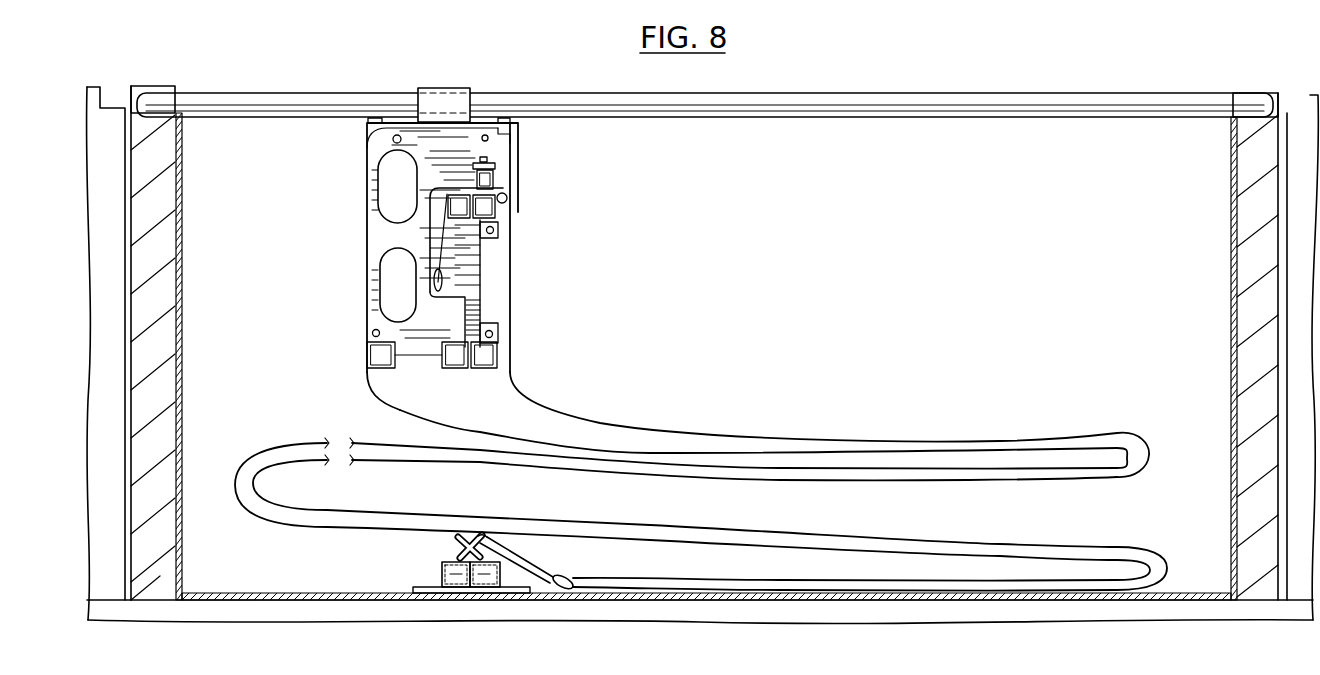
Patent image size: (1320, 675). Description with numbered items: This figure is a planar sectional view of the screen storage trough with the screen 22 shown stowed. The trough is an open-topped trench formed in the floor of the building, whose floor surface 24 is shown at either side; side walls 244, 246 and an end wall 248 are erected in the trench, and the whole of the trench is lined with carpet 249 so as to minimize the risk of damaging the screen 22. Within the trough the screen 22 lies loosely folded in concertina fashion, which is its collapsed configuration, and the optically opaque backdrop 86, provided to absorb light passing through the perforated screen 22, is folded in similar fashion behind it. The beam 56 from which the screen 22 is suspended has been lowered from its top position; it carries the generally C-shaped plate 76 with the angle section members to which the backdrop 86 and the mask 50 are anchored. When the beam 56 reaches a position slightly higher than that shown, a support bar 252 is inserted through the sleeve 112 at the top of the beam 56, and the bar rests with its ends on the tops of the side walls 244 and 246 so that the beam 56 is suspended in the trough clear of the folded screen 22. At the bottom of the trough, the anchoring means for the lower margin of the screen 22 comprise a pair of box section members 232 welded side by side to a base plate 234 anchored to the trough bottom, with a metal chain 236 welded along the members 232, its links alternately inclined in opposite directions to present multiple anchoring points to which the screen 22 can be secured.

The floor surface 24 is at (98, 84).
The metal chain 236 is at (135, 167).
The side wall 244 is at (158, 283).
The side wall 246 is at (1252, 220).
The carpet 249 is at (1178, 596).
The support bar 252 is at (851, 104).
The sleeve 112 is at (458, 98).
The end wall 248 is at (881, 236).
The beam 56 is at (362, 205).
The plate 76 is at (413, 146).
The mask 50 is at (518, 168).
The backdrop 86 is at (366, 398).
The screen 22 is at (600, 420).
The box section member 232 is at (442, 578).
The base plate 234 is at (420, 588).